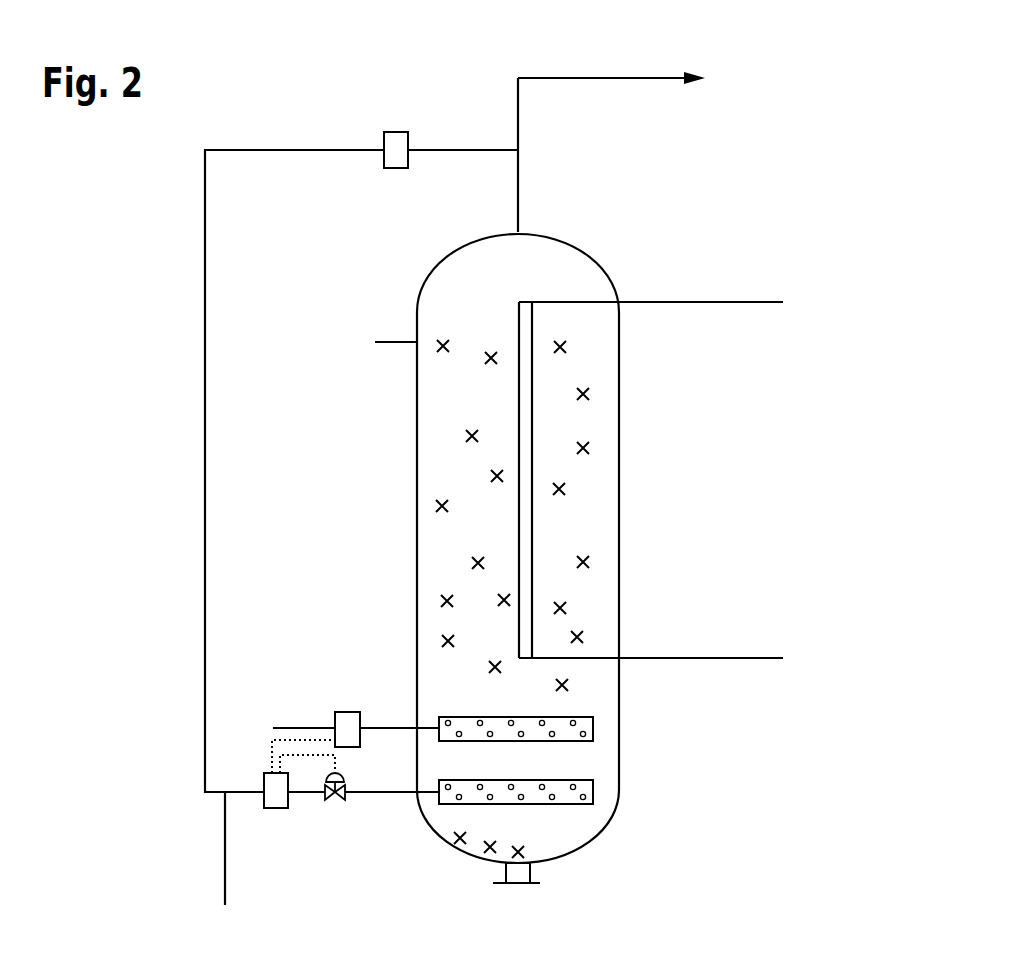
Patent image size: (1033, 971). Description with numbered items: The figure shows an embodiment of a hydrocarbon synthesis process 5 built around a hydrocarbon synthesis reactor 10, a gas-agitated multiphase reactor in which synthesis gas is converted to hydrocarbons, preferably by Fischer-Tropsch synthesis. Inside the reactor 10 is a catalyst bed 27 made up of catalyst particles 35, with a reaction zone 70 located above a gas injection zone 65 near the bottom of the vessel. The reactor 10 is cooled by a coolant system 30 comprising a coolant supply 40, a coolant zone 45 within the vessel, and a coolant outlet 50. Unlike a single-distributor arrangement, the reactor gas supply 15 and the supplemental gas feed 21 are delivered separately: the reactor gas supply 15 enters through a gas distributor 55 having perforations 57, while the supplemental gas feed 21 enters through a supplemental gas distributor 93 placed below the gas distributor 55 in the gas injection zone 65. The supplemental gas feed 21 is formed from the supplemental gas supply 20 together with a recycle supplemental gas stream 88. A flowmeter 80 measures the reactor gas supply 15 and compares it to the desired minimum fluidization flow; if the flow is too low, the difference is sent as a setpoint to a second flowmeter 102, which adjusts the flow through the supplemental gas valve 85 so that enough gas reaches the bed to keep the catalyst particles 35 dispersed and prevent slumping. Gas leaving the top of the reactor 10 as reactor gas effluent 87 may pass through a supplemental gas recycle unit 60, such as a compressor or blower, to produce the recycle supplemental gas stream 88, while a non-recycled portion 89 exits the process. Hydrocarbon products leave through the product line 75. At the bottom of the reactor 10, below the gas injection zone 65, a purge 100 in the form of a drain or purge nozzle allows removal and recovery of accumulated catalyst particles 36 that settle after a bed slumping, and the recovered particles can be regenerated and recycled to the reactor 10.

The hydrocarbon synthesis process 5 is at (680, 154).
The hydrocarbon synthesis reactor 10 is at (600, 263).
The reactor gas supply 15 is at (312, 725).
The supplemental gas supply 20 is at (225, 863).
The supplemental gas feed 21 is at (358, 797).
The catalyst bed 27 is at (603, 347).
The coolant system 30 is at (775, 648).
The catalyst particles 35 is at (590, 561).
The accumulated catalyst particles 36 is at (487, 863).
The coolant supply 40 is at (668, 658).
The coolant zone 45 is at (521, 505).
The coolant outlet 50 is at (757, 302).
The gas distributor 55 is at (563, 734).
The perforations 57 is at (523, 733).
The supplemental gas recycle unit 60 is at (398, 132).
The gas injection zone 65 is at (563, 828).
The reaction zone 70 is at (440, 432).
The product line 75 is at (393, 340).
The flowmeter 80 is at (348, 712).
The supplemental gas valve 85 is at (340, 800).
The reactor gas effluent 87 is at (520, 160).
The recycle supplemental gas stream 88 is at (207, 548).
The non-recycled portion 89 is at (613, 78).
The supplemental gas distributor 93 is at (543, 805).
The purge 100 is at (532, 872).
The flowmeter 102 is at (265, 782).